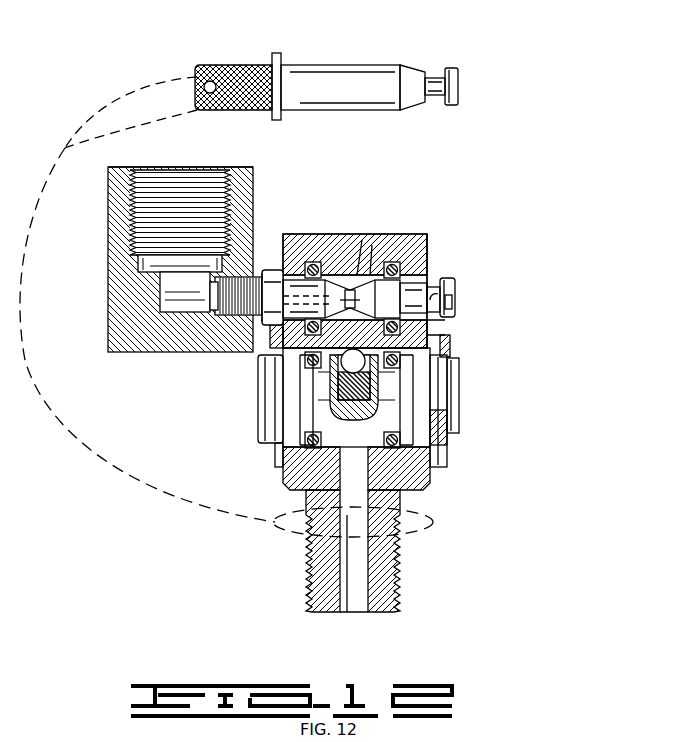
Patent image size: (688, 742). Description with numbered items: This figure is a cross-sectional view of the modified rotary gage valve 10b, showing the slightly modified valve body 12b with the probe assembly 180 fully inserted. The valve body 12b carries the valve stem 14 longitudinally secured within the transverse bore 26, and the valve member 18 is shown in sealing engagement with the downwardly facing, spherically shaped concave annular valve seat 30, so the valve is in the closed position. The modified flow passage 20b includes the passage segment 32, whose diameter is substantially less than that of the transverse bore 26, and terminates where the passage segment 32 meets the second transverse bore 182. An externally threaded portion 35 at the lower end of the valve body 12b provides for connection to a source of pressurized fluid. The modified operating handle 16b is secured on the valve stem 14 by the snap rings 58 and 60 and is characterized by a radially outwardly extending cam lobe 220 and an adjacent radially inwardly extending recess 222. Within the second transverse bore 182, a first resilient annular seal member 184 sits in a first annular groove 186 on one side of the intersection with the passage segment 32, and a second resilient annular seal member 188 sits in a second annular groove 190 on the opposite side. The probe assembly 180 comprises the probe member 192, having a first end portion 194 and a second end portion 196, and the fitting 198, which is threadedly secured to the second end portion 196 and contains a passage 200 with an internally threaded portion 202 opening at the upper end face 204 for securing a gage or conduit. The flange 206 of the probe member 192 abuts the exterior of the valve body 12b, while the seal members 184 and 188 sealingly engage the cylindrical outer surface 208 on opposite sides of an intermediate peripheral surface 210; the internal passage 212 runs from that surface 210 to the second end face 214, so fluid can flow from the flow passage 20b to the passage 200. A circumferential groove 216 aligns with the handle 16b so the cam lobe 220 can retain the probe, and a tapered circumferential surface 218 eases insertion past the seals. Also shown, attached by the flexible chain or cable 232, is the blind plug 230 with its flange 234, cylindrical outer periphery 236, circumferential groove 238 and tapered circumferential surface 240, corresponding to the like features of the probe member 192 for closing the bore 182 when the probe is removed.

The rotary gage valve 10b is at (499, 218).
The valve body 12b is at (430, 272).
The valve stem 14 is at (440, 431).
The operating handle 16b is at (440, 338).
The valve member 18 is at (328, 388).
The flow passage 20b is at (300, 484).
The transverse bore 26 is at (300, 376).
The valve seat 30 is at (365, 368).
The passage segment 32 is at (270, 362).
The externally threaded portion 35 is at (400, 592).
The snap ring 58 is at (430, 343).
The snap ring 60 is at (278, 456).
The probe assembly 180 is at (256, 192).
The second transverse bore 182 is at (277, 269).
The first resilient annular seal member 184 is at (420, 250).
The first annular groove 186 is at (426, 262).
The second resilient annular seal member 188 is at (322, 272).
The second annular groove 190 is at (328, 275).
The probe member 192 is at (452, 310).
The first end portion 194 is at (441, 285).
The second end portion 196 is at (227, 316).
The fitting 198 is at (116, 282).
The passage 200 is at (176, 303).
The internally threaded portion 202 is at (133, 218).
The upper end face 204 is at (128, 170).
The flange 206 is at (266, 270).
The cylindrical outer surface 208 is at (314, 262).
The intermediate peripheral surface 210 is at (360, 270).
The internal passage 212 is at (372, 270).
The second end face 214 is at (213, 308).
The circumferential groove 216 is at (440, 320).
The tapered circumferential surface 218 is at (448, 292).
The cam lobe 220 is at (452, 303).
The recess 222 is at (445, 328).
The blind plug 230 is at (302, 74).
The flexible chain or cable 232 is at (140, 477).
The flange 234 is at (279, 62).
The cylindrical outer periphery 236 is at (366, 66).
The circumferential groove 238 is at (433, 92).
The tapered circumferential surface 240 is at (410, 72).